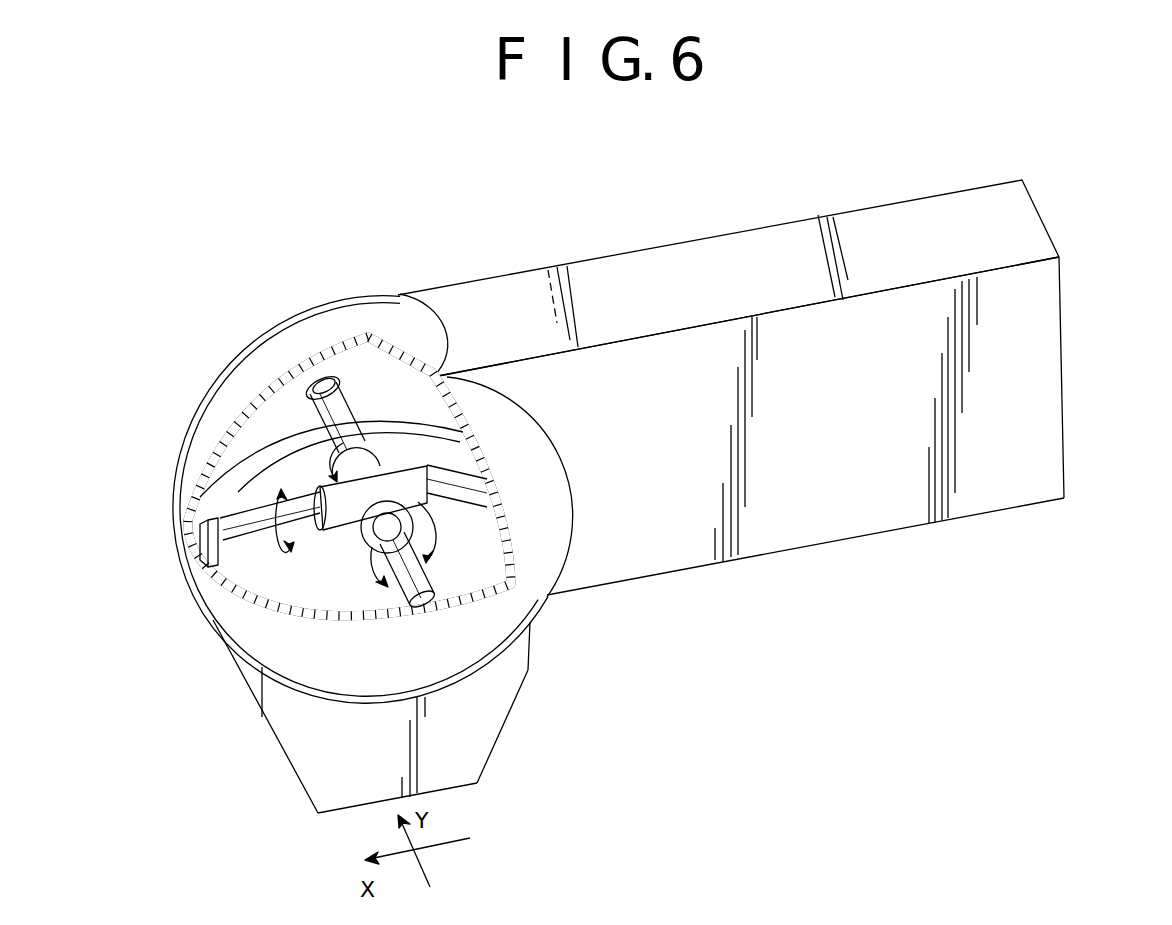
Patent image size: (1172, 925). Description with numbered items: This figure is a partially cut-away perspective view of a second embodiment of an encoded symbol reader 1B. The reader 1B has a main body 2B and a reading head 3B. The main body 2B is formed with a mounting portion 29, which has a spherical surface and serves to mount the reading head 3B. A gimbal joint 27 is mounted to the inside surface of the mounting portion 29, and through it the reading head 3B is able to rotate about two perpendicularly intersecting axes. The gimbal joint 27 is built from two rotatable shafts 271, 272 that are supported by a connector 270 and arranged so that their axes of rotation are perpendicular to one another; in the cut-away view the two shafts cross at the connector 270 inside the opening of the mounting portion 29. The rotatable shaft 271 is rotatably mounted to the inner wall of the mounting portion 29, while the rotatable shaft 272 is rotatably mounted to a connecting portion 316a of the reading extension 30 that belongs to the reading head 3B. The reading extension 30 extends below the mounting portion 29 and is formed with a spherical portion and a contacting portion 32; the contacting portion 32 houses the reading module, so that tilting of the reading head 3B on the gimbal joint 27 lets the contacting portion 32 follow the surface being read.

The encoded symbol reader 1B is at (993, 179).
The main body 2B is at (1066, 450).
The reading head 3B is at (288, 766).
The gimbal joint 27 is at (347, 552).
The mounting portion 29 is at (363, 307).
The reading extension 30 is at (507, 685).
The contacting portion 32 is at (453, 790).
The connector 270 is at (328, 450).
The rotatable shaft 271 is at (308, 405).
The rotatable shaft 272 is at (236, 520).
The connecting portion 316a is at (203, 530).